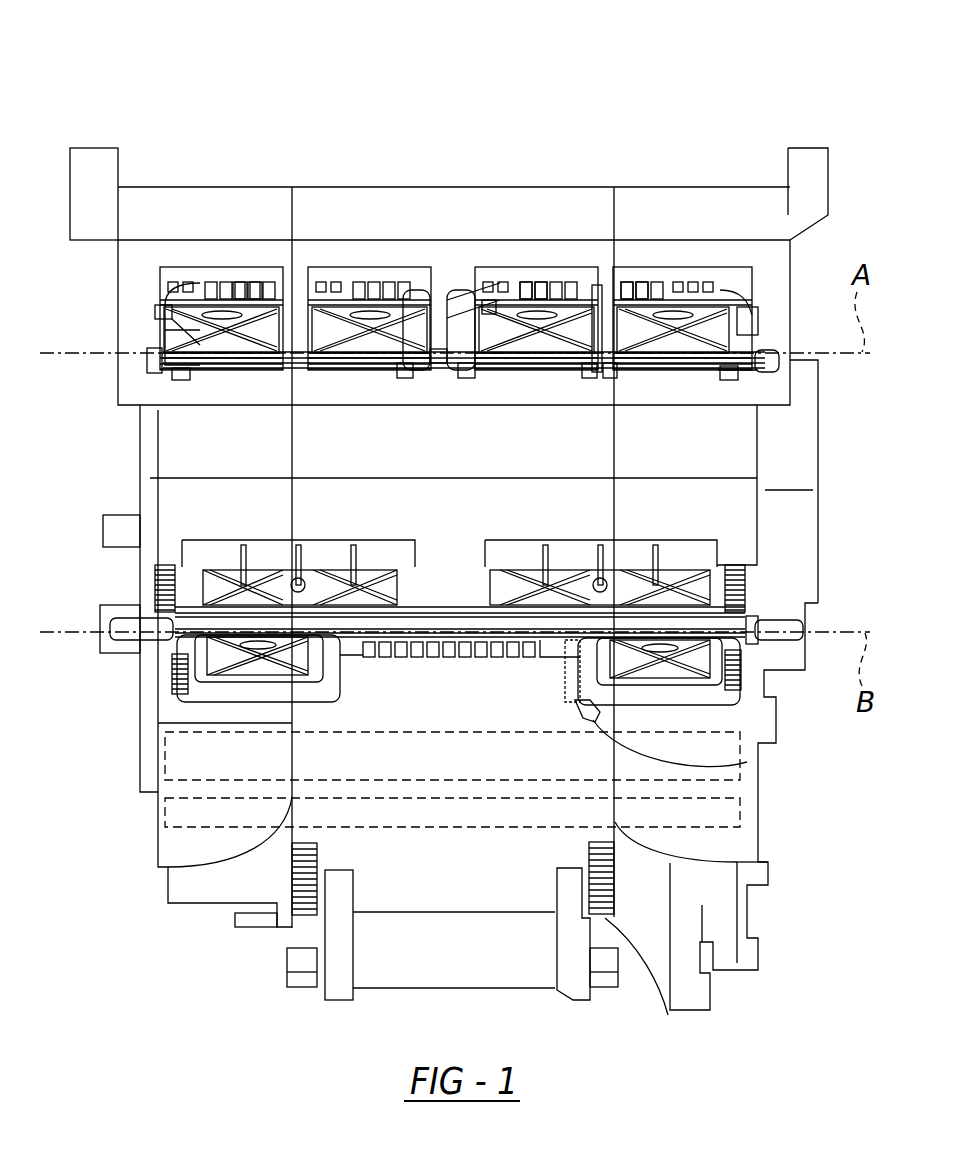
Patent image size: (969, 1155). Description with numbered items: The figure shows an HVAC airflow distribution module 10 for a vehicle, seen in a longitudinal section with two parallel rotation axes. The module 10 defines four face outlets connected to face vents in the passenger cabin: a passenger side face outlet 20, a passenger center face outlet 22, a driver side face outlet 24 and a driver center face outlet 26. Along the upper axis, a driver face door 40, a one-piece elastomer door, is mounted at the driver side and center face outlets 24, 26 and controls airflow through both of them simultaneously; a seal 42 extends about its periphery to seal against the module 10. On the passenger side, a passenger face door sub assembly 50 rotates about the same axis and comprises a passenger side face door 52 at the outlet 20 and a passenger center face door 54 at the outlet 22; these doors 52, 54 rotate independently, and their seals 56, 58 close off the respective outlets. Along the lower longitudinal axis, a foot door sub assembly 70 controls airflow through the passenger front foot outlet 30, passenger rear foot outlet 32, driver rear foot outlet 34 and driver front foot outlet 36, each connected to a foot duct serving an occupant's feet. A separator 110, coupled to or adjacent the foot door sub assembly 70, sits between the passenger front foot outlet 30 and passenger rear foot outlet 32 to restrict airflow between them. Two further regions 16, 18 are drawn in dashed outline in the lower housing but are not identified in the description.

The HVAC airflow distribution module 10 is at (122, 82).
The electric machine rotor 16 is at (165, 750).
The electric machine stator 18 is at (165, 812).
The passenger side face outlet 20 is at (650, 267).
The passenger center face outlet 22 is at (560, 267).
The driver side face outlet 24 is at (207, 268).
The driver center face outlet 26 is at (378, 268).
The passenger front foot outlet 30 is at (760, 808).
The passenger rear foot outlet 32 is at (613, 913).
The driver rear foot outlet 34 is at (303, 917).
The driver front foot outlet 36 is at (158, 842).
The driver face door 40 is at (163, 285).
The seal 42 is at (257, 288).
The passenger face door sub assembly 50 is at (627, 290).
The passenger side face door 52 is at (750, 287).
The passenger center face door 54 is at (510, 290).
The seal 56 is at (643, 290).
The seal 58 is at (530, 292).
The foot door sub assembly 70 is at (157, 590).
The separator 110 is at (747, 760).